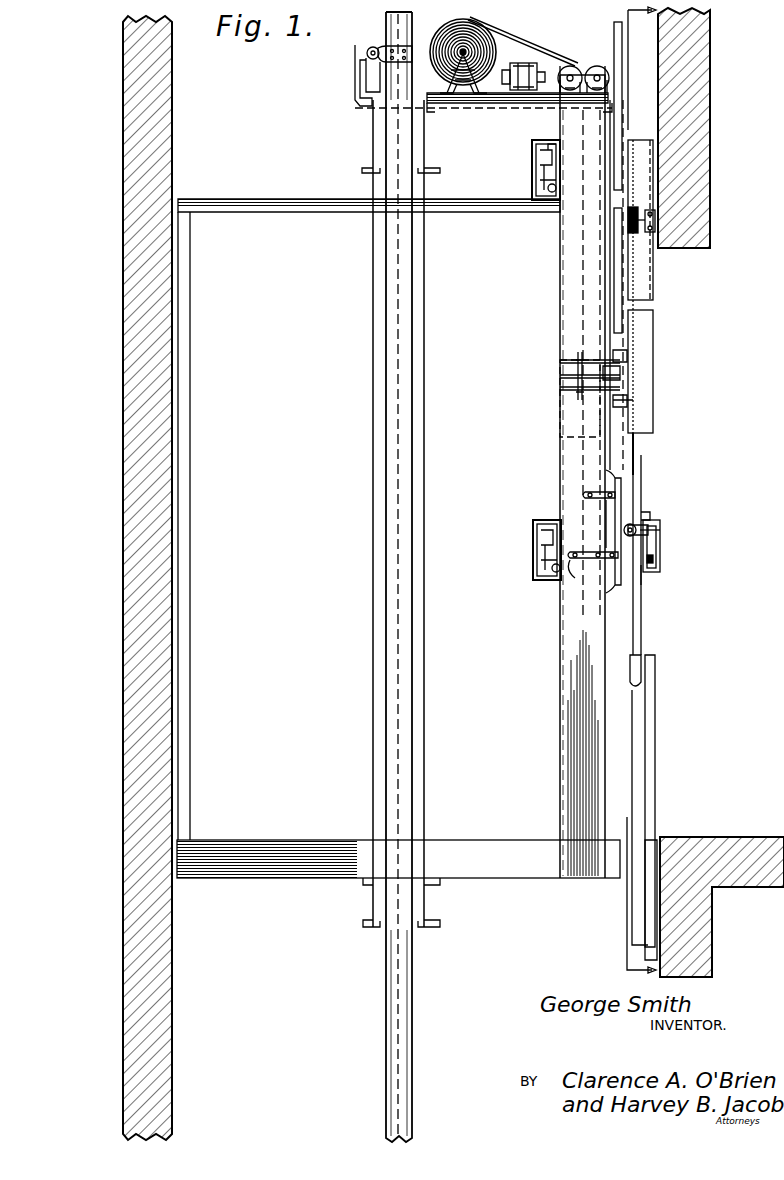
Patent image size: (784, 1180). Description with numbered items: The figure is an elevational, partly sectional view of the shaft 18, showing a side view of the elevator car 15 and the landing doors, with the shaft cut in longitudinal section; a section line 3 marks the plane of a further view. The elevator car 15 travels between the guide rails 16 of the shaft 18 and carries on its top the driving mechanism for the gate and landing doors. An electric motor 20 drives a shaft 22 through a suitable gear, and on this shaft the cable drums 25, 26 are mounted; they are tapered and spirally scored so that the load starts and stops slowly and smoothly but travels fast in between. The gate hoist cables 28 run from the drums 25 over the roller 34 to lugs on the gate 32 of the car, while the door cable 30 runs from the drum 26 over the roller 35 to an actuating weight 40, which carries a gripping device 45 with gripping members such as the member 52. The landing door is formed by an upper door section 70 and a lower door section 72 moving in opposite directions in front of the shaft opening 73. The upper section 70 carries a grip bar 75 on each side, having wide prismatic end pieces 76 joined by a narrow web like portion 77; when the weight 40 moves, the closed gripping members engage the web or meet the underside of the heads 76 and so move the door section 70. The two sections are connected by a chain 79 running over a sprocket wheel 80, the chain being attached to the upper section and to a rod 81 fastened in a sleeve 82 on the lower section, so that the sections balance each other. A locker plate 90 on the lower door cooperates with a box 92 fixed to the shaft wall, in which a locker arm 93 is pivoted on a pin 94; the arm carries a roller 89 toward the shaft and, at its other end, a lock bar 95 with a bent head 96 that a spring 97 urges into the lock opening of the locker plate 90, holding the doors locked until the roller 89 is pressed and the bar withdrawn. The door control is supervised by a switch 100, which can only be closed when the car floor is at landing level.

The section line 3- 3 is at (641, 490).
The elevator car 15 is at (502, 878).
The guide rails 16 is at (412, 1062).
The shaft 18 is at (172, 958).
The electric motor 20 is at (528, 70).
The shaft 22 is at (466, 50).
The cable drums 25 is at (452, 30).
The cable drum 26 is at (463, 93).
The gate hoist cables 28 is at (516, 48).
The cable 30 is at (560, 308).
The gate 32 is at (620, 330).
The roller 34 is at (600, 66).
The roller 35 is at (558, 82).
The actuating weight 40 is at (558, 428).
The gripping device 45 is at (554, 378).
The gripping member 52 is at (572, 360).
The upper door section 70 is at (645, 386).
The lower door section 72 is at (648, 722).
The shaft opening 73 is at (708, 494).
The grip bar 75 is at (628, 402).
The prismatic end pieces 76 is at (622, 355).
The web like portion 77 is at (620, 373).
The chain 79 is at (640, 448).
The sprocket wheel 80 is at (635, 205).
The rod 81 is at (641, 624).
The sleeve 82 is at (641, 672).
The roller 89 is at (624, 532).
The locker plate 90 is at (624, 490).
The box 92 is at (661, 548).
The locker arm 93 is at (650, 528).
The pin 94 is at (658, 533).
The lock bar 95 is at (662, 557).
The bent head 96 is at (647, 515).
The spring 97 is at (645, 582).
The switch 100 is at (524, 189).